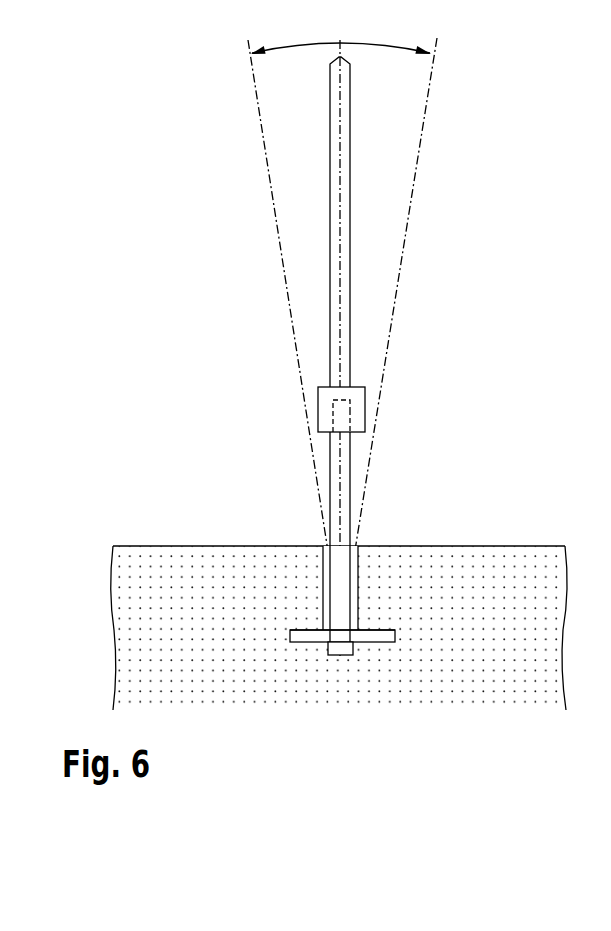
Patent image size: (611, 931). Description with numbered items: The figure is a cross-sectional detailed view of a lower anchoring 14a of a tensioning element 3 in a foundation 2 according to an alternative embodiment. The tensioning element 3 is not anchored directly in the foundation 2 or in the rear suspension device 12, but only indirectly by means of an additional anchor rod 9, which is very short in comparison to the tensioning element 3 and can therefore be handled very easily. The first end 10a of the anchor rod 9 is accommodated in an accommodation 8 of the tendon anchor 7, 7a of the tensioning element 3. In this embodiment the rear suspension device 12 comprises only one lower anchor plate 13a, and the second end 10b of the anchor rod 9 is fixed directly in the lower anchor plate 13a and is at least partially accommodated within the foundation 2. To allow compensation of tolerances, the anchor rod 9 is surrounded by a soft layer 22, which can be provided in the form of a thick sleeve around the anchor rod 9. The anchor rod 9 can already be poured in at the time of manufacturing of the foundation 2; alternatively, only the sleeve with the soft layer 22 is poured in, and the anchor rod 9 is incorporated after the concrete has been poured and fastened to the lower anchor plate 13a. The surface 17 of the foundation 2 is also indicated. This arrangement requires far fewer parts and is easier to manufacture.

The foundation 2 is at (356, 591).
The tensioning element 3 is at (413, 349).
The tendon anchor 7 is at (429, 376).
The tendon anchor 7a is at (429, 376).
The accommodation 8 is at (352, 421).
The anchor rod 9 is at (289, 465).
The first end 10a is at (273, 362).
The second end 10b is at (183, 665).
The rear suspension device 12 is at (201, 647).
The lower anchor plate 13a is at (297, 633).
The lower anchoring 14a is at (362, 659).
The ground surface 17 is at (438, 557).
The soft layer 22 is at (284, 665).